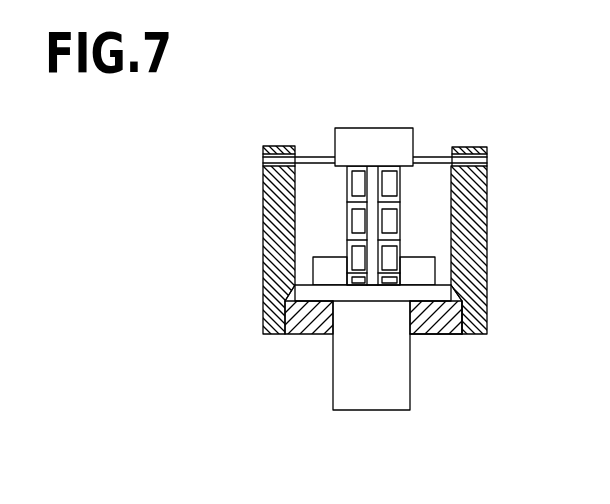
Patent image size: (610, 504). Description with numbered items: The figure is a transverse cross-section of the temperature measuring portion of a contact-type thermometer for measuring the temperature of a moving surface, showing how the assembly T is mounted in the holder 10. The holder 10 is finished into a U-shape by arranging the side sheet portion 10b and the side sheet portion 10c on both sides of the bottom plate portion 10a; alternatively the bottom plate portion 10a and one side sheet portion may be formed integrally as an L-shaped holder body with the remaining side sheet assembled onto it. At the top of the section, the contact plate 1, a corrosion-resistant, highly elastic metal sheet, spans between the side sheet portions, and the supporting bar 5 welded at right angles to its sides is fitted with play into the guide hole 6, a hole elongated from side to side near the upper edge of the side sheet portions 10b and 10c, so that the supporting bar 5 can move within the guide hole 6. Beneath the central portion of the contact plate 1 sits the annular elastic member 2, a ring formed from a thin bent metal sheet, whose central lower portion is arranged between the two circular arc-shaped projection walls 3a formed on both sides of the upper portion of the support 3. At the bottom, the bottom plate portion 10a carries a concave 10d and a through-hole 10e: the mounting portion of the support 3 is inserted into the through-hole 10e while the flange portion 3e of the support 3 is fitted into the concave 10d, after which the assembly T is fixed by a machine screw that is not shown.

The contact plate 1 is at (352, 128).
The annular elastic member 2 is at (402, 185).
The support 3 is at (358, 400).
The circular arc-shaped projection wall 3a is at (323, 271).
The flange portion 3e is at (490, 310).
The supporting bar 5 is at (443, 157).
The guide hole 6 is at (263, 166).
The holder 10 is at (492, 243).
The bottom plate portion 10a is at (298, 323).
The side sheet portion 10b is at (275, 237).
The side sheet portion 10c is at (435, 295).
The concave 10d is at (447, 340).
The through-hole 10e is at (430, 320).
The assembly T is at (326, 184).